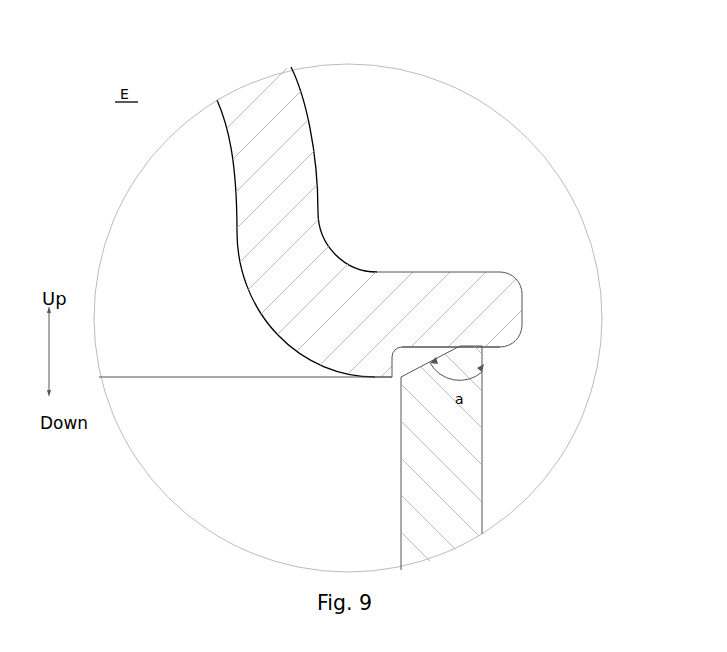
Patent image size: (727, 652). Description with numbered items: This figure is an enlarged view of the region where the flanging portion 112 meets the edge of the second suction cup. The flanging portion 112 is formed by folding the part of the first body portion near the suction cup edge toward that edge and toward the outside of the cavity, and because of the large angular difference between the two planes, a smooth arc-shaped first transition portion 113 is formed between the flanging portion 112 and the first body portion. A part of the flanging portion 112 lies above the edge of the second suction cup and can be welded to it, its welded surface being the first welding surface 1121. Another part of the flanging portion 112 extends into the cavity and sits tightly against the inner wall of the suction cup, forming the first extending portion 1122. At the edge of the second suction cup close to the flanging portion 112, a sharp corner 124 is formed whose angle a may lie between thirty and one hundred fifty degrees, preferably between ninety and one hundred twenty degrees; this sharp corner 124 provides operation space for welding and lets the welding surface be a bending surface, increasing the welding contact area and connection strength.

The first transition portion 113 is at (303, 288).
The flanging portion 112 is at (422, 315).
The first welding surface 1121 is at (473, 347).
The first extending portion 1122 is at (365, 378).
The sharp corner 124 is at (457, 346).